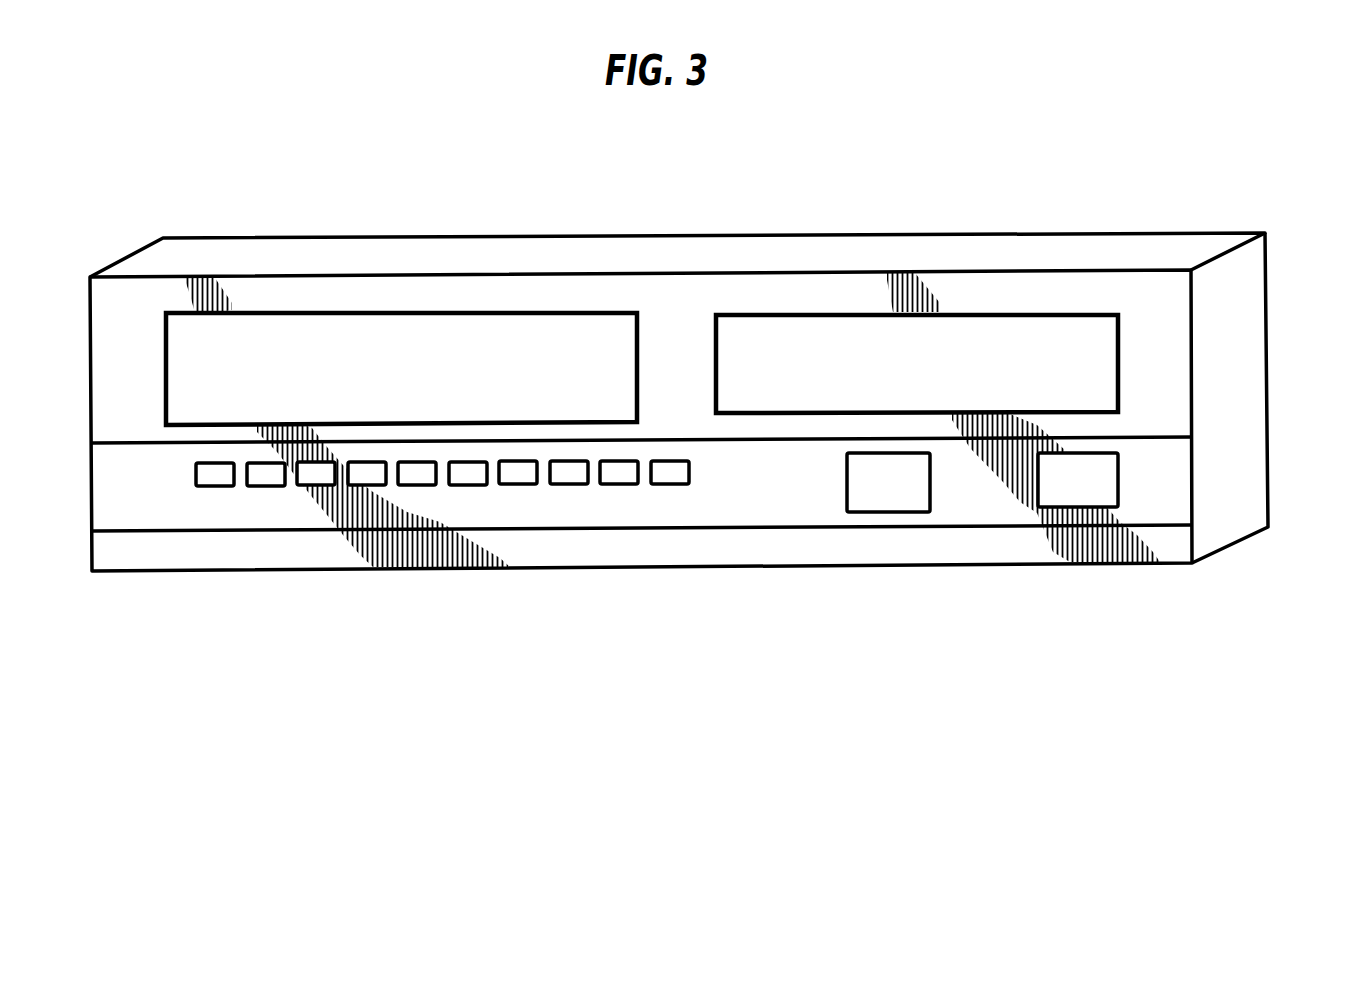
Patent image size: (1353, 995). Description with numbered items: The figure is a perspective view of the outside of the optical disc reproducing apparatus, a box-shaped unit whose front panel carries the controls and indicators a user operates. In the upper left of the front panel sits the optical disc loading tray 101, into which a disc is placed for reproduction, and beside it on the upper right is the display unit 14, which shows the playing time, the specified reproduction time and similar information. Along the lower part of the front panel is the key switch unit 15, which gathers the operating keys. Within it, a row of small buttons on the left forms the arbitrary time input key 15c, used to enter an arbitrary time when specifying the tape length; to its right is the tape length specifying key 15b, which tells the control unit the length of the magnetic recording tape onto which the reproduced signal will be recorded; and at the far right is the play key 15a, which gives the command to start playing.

The optical disc loading tray 101 is at (427, 352).
The display unit 14 is at (847, 343).
The key switch unit 15 is at (677, 617).
The play key 15a is at (1086, 550).
The tape length specifying key 15b is at (872, 512).
The arbitrary time input key 15c is at (443, 525).